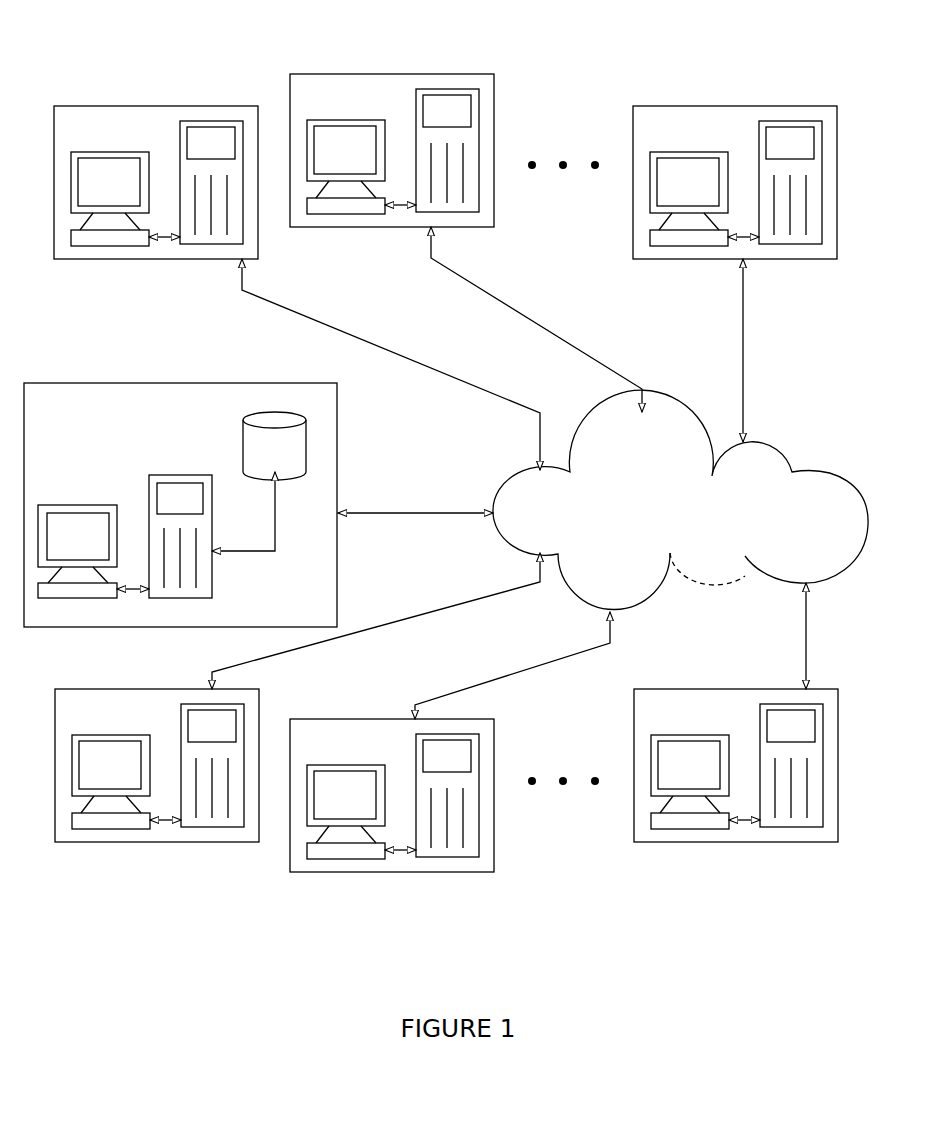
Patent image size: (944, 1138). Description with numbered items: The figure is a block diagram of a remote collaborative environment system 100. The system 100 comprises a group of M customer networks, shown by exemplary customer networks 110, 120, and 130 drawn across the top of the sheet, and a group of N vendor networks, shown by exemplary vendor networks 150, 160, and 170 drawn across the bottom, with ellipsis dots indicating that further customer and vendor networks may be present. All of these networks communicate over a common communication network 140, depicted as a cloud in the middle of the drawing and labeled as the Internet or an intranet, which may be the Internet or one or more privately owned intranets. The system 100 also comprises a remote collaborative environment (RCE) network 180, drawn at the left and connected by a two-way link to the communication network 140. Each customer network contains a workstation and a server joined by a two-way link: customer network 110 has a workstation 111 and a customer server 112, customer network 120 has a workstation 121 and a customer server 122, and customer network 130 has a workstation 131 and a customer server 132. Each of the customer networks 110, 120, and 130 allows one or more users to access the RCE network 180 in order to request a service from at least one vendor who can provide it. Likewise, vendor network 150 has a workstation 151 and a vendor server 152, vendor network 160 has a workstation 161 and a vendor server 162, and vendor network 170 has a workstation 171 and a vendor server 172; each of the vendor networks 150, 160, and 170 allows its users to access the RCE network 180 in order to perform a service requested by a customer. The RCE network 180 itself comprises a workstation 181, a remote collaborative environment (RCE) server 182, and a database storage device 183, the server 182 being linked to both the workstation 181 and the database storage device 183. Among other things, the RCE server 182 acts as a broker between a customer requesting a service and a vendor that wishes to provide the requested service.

The remote collaborative environment system 100 is at (446, 515).
The customer network 110 is at (117, 106).
The workstation 111 is at (86, 152).
The customer server 112 is at (180, 138).
The customer network 120 is at (353, 74).
The workstation 121 is at (322, 120).
The customer server 122 is at (416, 106).
The customer network 130 is at (713, 106).
The workstation 131 is at (665, 152).
The customer server 132 is at (759, 138).
The common communication network 140 is at (792, 457).
The vendor network 150 is at (149, 842).
The workstation 151 is at (87, 735).
The vendor server 152 is at (181, 721).
The vendor network 160 is at (353, 872).
The workstation 161 is at (322, 765).
The vendor server 162 is at (416, 751).
The vendor network 170 is at (743, 842).
The workstation 171 is at (666, 735).
The vendor server 172 is at (760, 721).
The remote collaborative environment (RCE) network 180 is at (133, 383).
The workstation 181 is at (55, 505).
The remote collaborative environment (RCE) server 182 is at (149, 490).
The database storage device 183 is at (243, 428).